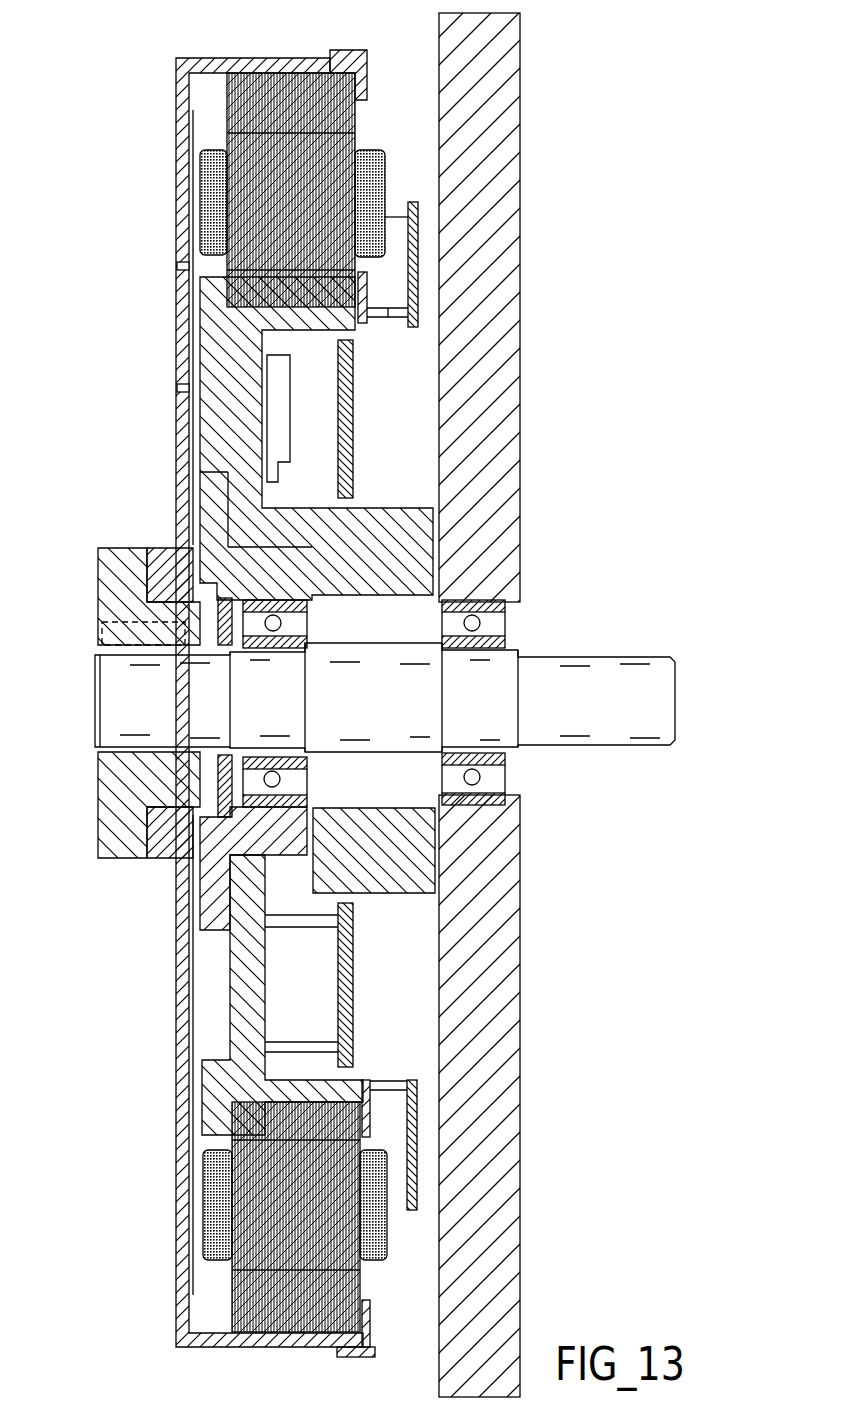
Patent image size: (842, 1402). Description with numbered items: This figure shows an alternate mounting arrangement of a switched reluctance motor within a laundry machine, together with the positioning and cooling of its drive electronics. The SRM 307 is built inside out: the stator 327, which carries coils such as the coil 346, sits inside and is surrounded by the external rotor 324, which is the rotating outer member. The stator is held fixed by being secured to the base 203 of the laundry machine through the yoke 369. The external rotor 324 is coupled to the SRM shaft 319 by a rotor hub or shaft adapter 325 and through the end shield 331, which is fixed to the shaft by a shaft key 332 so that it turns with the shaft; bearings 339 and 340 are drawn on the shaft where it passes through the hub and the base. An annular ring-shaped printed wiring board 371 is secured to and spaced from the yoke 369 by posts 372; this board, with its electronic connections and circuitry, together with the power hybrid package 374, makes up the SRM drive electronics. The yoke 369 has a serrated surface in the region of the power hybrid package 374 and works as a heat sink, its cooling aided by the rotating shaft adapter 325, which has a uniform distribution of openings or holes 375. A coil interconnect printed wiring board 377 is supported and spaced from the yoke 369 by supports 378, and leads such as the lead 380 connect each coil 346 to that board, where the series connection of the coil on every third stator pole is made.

The base 203 is at (508, 337).
The SRM 307 is at (410, 468).
The SRM shaft 319 is at (488, 678).
The external rotor 324 is at (358, 112).
The shaft adapter 325 is at (183, 358).
The stator 327 is at (363, 137).
The end shield 331 is at (118, 600).
The shaft key 332 is at (102, 628).
The bearing 339 is at (305, 624).
The bearing 340 is at (506, 620).
The coil 346 is at (378, 153).
The yoke 369 is at (222, 418).
The printed wiring board 371 is at (353, 388).
The posts 372 is at (327, 932).
The power hybrid package 374 is at (287, 420).
The holes 375 is at (183, 268).
The coil interconnect printed wiring board 377 is at (413, 267).
The supports 378 is at (390, 318).
The leads 380 is at (396, 216).